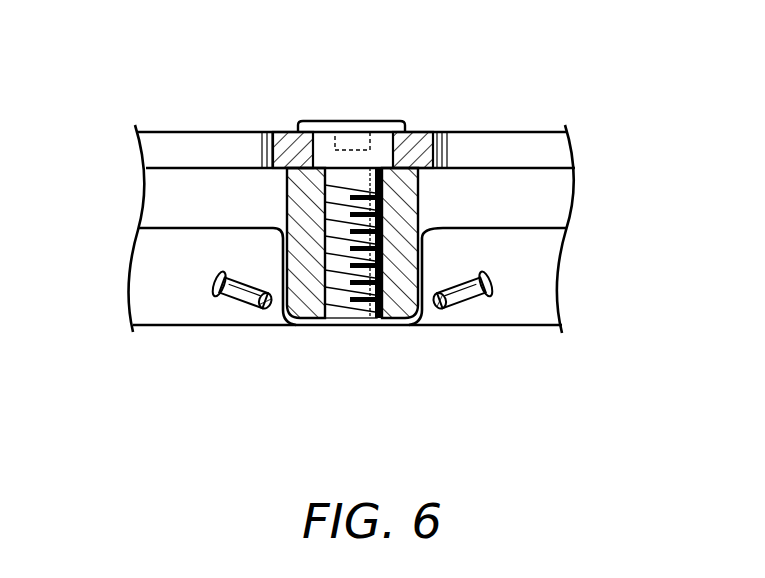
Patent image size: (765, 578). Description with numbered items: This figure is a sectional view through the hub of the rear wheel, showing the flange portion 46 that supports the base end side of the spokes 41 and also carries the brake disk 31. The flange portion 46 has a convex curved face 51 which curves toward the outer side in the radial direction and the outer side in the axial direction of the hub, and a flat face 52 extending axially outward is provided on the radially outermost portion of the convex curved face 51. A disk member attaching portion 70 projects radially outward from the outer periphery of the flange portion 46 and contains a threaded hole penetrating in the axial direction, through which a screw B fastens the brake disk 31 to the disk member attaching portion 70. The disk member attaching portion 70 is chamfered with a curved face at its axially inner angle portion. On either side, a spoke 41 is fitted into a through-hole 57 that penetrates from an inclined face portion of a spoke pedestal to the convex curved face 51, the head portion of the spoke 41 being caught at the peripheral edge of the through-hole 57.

The screw B is at (380, 121).
The brake disk 31 is at (533, 122).
The spoke 41 is at (236, 306).
The flange portion 46 is at (560, 200).
The convex curved face 51 is at (530, 276).
The flat face 52 is at (156, 205).
The through-hole 57 is at (225, 300).
The disk member attaching portion 70 is at (395, 338).